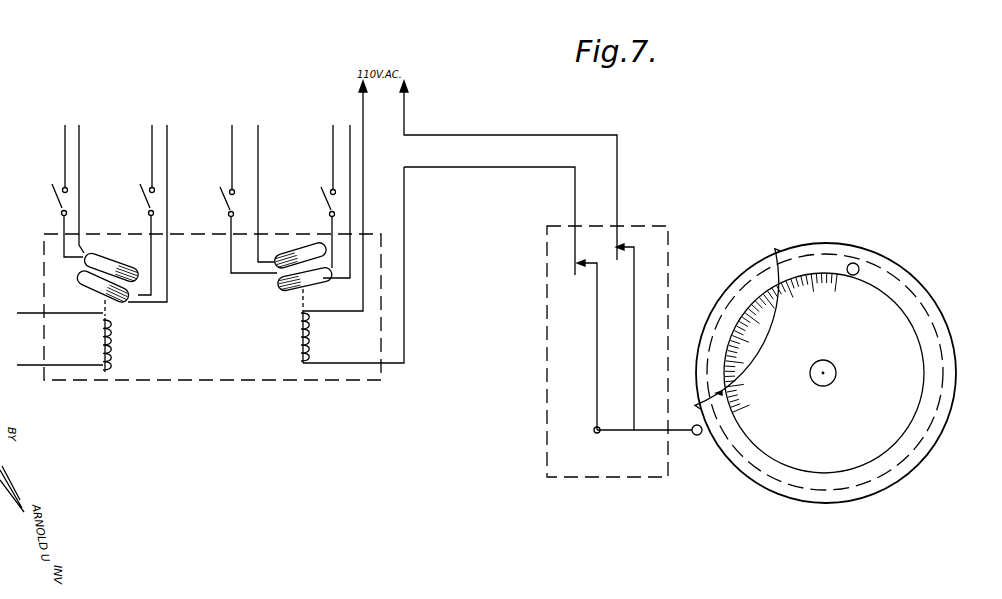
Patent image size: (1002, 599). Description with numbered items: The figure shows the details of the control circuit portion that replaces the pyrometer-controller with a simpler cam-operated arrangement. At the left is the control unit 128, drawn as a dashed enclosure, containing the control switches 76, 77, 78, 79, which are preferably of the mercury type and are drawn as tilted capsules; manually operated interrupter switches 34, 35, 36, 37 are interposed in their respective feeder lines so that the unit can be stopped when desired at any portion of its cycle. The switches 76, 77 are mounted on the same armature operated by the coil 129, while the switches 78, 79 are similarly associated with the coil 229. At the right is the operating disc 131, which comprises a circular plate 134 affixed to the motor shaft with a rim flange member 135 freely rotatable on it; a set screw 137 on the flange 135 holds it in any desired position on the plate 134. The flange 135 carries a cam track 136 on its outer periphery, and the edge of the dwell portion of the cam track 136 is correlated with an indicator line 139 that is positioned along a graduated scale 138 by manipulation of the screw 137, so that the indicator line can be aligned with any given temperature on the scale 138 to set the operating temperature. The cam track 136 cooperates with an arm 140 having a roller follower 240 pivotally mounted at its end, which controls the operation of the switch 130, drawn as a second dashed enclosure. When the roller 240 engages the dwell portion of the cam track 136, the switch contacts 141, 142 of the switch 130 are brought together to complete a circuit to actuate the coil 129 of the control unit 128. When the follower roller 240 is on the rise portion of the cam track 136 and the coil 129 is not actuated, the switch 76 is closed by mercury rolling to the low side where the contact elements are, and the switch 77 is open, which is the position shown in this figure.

The interrupter switch 34 is at (228, 207).
The interrupter switch 35 is at (329, 205).
The interrupter switch 36 is at (58, 205).
The interrupter switch 37 is at (146, 205).
The control switch 76 is at (291, 257).
The control switch 77 is at (289, 291).
The control switch 78 is at (112, 265).
The control switch 79 is at (96, 285).
The control unit 128 is at (230, 380).
The coil 129 is at (310, 344).
The switch 130 is at (666, 242).
The operating disc 131 is at (937, 298).
The circular plate 134 is at (826, 458).
The rim flange member 135 is at (907, 463).
The cam track 136 is at (729, 298).
The set screw 137 is at (858, 265).
The graduated scale 138 is at (804, 294).
The indicator line 139 is at (718, 393).
The arm 140 is at (650, 432).
The switch contact 141 is at (583, 267).
The switch contact 142 is at (621, 251).
The coil 229 is at (113, 348).
The roller follower 240 is at (697, 436).